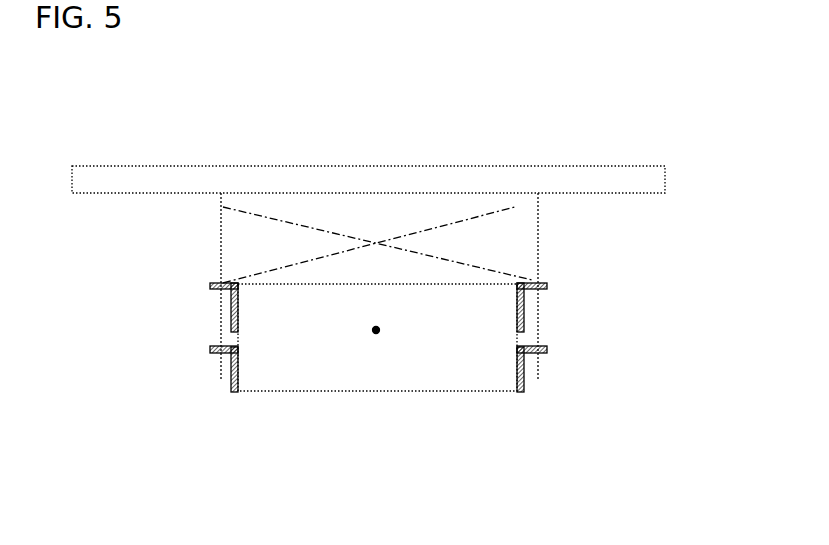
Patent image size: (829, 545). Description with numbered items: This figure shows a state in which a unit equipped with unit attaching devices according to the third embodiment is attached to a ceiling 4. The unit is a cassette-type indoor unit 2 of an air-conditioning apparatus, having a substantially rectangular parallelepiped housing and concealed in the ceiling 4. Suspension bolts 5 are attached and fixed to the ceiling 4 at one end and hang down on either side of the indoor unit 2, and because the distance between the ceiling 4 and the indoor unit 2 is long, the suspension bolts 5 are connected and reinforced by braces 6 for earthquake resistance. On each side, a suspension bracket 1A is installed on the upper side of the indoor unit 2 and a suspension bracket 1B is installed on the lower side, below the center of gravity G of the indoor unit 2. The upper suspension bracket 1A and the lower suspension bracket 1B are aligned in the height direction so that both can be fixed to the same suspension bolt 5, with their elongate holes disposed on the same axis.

The ceiling 4 is at (615, 193).
The suspension bolt 5 is at (540, 260).
The brace 6 is at (515, 205).
The indoor unit 2 is at (488, 392).
The suspension bracket 1A is at (232, 302).
The suspension bracket 1B is at (232, 388).
The center of gravity G is at (386, 331).